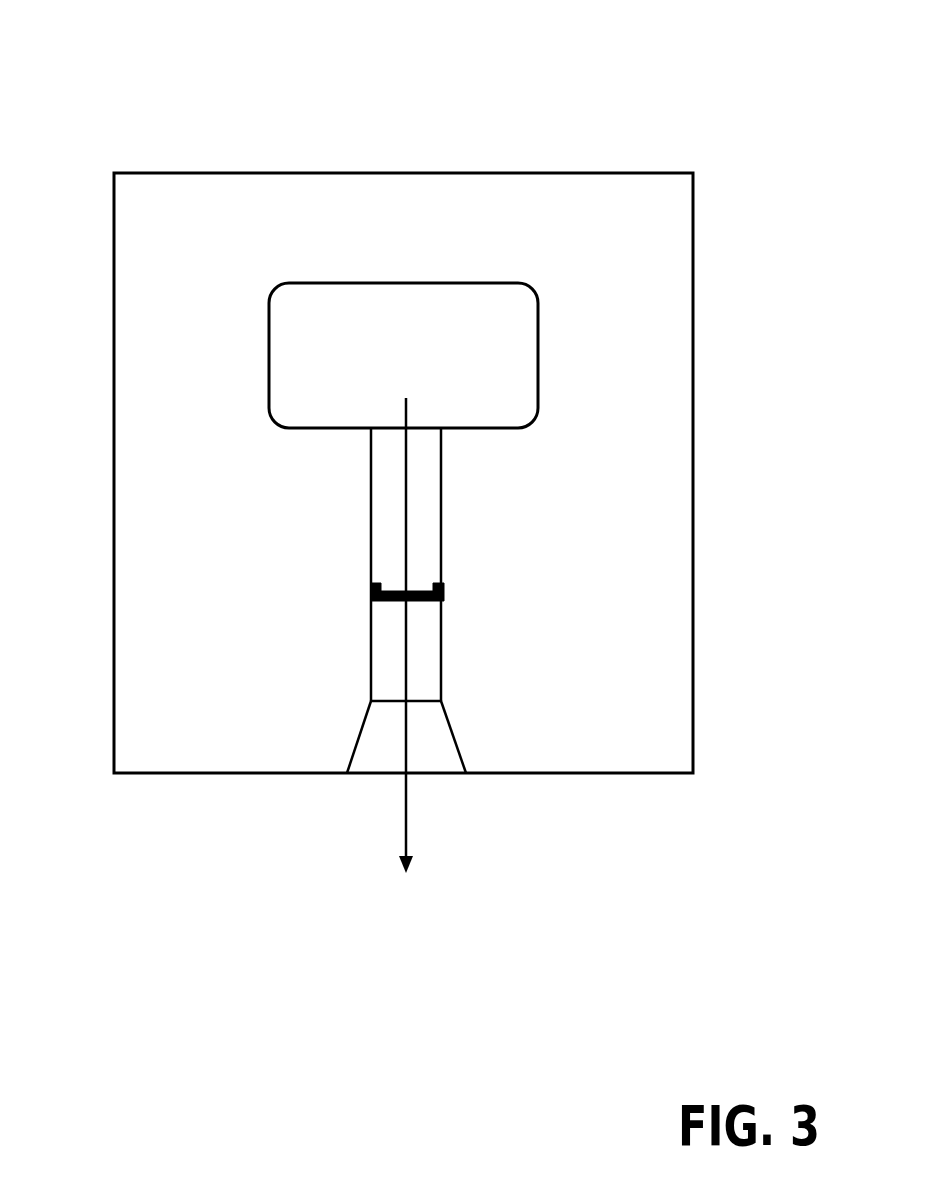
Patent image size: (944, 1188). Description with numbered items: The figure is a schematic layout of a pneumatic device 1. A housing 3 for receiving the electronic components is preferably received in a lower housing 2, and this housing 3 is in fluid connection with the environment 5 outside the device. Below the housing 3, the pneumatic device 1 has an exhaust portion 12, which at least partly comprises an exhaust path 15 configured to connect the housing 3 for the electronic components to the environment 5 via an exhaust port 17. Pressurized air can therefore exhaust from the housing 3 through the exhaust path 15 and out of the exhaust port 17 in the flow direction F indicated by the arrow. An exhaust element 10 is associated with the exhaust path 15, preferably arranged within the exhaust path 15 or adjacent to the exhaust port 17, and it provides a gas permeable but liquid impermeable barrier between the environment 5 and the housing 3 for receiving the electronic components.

The pneumatic device 1 is at (163, 118).
The lower housing 2 is at (625, 417).
The housing for receiving the electronic components 3 is at (472, 300).
The environment 5 is at (197, 905).
The exhaust element 10 is at (343, 604).
The exhaust portion 12 is at (463, 633).
The exhaust path 15 is at (430, 562).
The exhaust port 17 is at (448, 733).